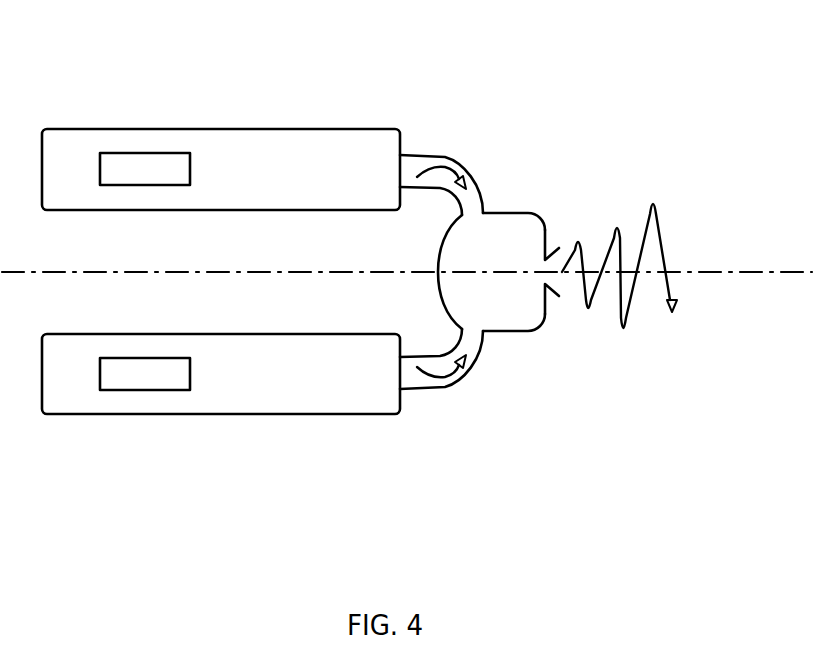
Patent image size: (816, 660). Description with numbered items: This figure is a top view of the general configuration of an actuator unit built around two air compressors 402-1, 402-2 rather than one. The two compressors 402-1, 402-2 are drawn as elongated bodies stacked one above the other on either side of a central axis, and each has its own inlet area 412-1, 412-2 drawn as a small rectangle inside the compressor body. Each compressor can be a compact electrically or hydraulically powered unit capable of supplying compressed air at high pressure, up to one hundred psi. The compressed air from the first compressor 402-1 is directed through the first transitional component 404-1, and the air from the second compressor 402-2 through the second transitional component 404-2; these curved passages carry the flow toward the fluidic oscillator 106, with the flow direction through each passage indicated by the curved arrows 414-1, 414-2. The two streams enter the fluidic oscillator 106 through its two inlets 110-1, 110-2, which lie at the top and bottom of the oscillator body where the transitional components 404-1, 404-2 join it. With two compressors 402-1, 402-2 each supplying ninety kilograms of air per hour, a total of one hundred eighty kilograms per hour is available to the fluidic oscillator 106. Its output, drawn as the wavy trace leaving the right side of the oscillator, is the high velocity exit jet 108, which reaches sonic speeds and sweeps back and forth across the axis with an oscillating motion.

The air compressor 402-1 is at (303, 128).
The air compressor 402-2 is at (280, 415).
The inlet area 412-1 is at (147, 152).
The inlet area 412-2 is at (140, 391).
The transitional component 404-1 is at (417, 154).
The transitional component 404-2 is at (480, 356).
The first flow direction 414-1 is at (459, 176).
The second flow direction 414-2 is at (459, 368).
The inlet 110-1 is at (483, 215).
The inlet 110-2 is at (473, 331).
The fluidic oscillator 106 is at (523, 239).
The exit jet 108 is at (668, 248).